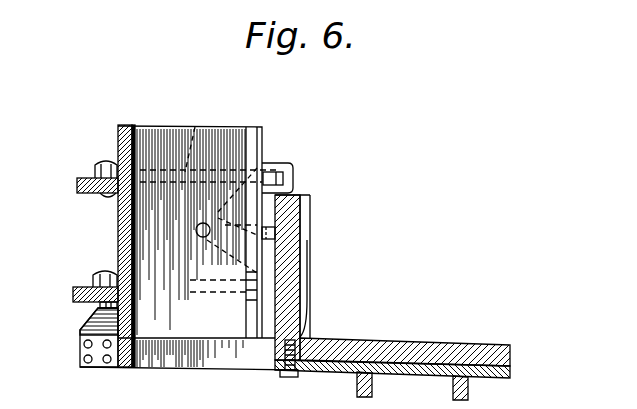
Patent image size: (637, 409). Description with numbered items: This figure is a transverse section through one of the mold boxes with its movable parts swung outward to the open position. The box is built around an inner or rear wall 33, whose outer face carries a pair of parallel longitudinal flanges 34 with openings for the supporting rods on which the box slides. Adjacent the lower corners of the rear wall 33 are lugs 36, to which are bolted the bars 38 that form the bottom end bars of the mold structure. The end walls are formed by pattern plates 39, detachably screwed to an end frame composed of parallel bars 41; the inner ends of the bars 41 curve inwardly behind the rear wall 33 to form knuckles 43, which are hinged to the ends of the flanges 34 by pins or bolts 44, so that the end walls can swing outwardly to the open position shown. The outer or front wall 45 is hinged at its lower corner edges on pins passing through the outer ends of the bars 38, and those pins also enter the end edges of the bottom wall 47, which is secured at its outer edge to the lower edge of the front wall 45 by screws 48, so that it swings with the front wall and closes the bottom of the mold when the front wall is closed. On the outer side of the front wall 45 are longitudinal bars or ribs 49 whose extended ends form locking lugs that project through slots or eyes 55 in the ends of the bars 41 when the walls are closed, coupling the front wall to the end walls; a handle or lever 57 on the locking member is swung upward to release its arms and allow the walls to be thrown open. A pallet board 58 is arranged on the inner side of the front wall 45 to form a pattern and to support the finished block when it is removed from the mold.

The inner or rear wall 33 is at (127, 125).
The longitudinal flanges 34 is at (77, 188).
The lugs 36 is at (88, 330).
The bars 38 is at (205, 352).
The pattern plates 39 is at (158, 127).
The bars 41 is at (195, 127).
The knuckles 43 is at (95, 171).
The pins or bolts 44 is at (110, 163).
The outer or front wall 45 is at (492, 380).
The bottom wall 47 is at (293, 248).
The screws 48 is at (290, 377).
The longitudinal bars or ribs 49 is at (373, 394).
The slots or eyes 55 is at (292, 166).
The handle or lever 57 is at (283, 222).
The pallet board 58 is at (482, 346).